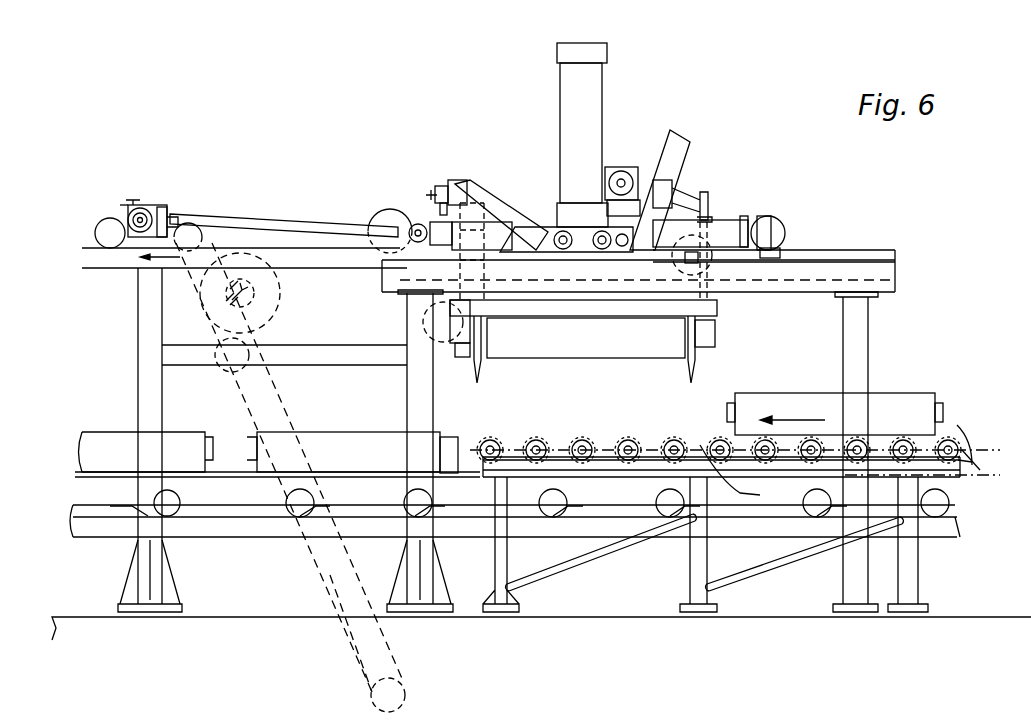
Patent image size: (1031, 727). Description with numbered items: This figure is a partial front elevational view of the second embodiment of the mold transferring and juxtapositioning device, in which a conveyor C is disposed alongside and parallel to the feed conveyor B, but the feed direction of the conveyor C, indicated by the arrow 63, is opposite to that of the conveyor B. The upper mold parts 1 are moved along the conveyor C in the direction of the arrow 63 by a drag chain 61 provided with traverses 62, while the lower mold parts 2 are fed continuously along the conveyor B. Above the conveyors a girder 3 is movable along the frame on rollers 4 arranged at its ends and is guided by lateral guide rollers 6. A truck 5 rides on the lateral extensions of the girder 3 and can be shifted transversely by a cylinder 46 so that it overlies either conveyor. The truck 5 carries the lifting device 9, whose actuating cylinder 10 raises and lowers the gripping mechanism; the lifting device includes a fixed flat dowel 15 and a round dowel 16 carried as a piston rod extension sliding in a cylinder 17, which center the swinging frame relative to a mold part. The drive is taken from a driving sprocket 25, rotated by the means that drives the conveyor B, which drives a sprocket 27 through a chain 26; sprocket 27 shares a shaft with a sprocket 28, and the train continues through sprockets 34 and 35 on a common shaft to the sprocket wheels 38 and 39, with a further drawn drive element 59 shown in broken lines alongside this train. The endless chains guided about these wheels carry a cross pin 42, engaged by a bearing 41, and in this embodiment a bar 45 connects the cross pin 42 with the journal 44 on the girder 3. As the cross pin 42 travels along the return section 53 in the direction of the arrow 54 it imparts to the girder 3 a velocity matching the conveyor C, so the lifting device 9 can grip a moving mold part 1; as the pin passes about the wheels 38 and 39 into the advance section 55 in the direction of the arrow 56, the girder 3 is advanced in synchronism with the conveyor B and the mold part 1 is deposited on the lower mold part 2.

The upper mold part 1 is at (915, 420).
The lower mold part 2 is at (102, 442).
The girder 3 is at (722, 232).
The rollers 4 is at (782, 222).
The truck 5 is at (661, 186).
The lateral guide rollers 6 is at (768, 260).
The lifting device 9 is at (718, 300).
The actuating cylinder 10 is at (593, 58).
The flat dowel element 15 is at (695, 380).
The round dowel element 16 is at (480, 383).
The cylinder 17 is at (482, 237).
The driving sprocket 25 is at (398, 690).
The chain 26 is at (354, 655).
The sprocket 27 is at (280, 305).
The sprocket 28 is at (257, 287).
The sprocket 34 is at (223, 208).
The sprocket 35 is at (192, 226).
The sprocket wheel 38 is at (72, 230).
The sprocket wheel 39 is at (97, 240).
The bearing 41 is at (160, 210).
The cross pin 42 is at (141, 208).
The journal 44 is at (433, 197).
The bar 45 is at (291, 226).
The cylinder 46 is at (633, 170).
The return section 53 is at (135, 255).
The arrow 54 is at (162, 257).
The advance section 55 is at (125, 238).
The arrow 56 is at (132, 200).
The belt 59 is at (243, 293).
The drag chain 61 is at (980, 470).
The traverses 62 is at (960, 430).
The arrow 63 is at (772, 410).
The feed conveyor B is at (110, 490).
The conveyor C is at (920, 480).